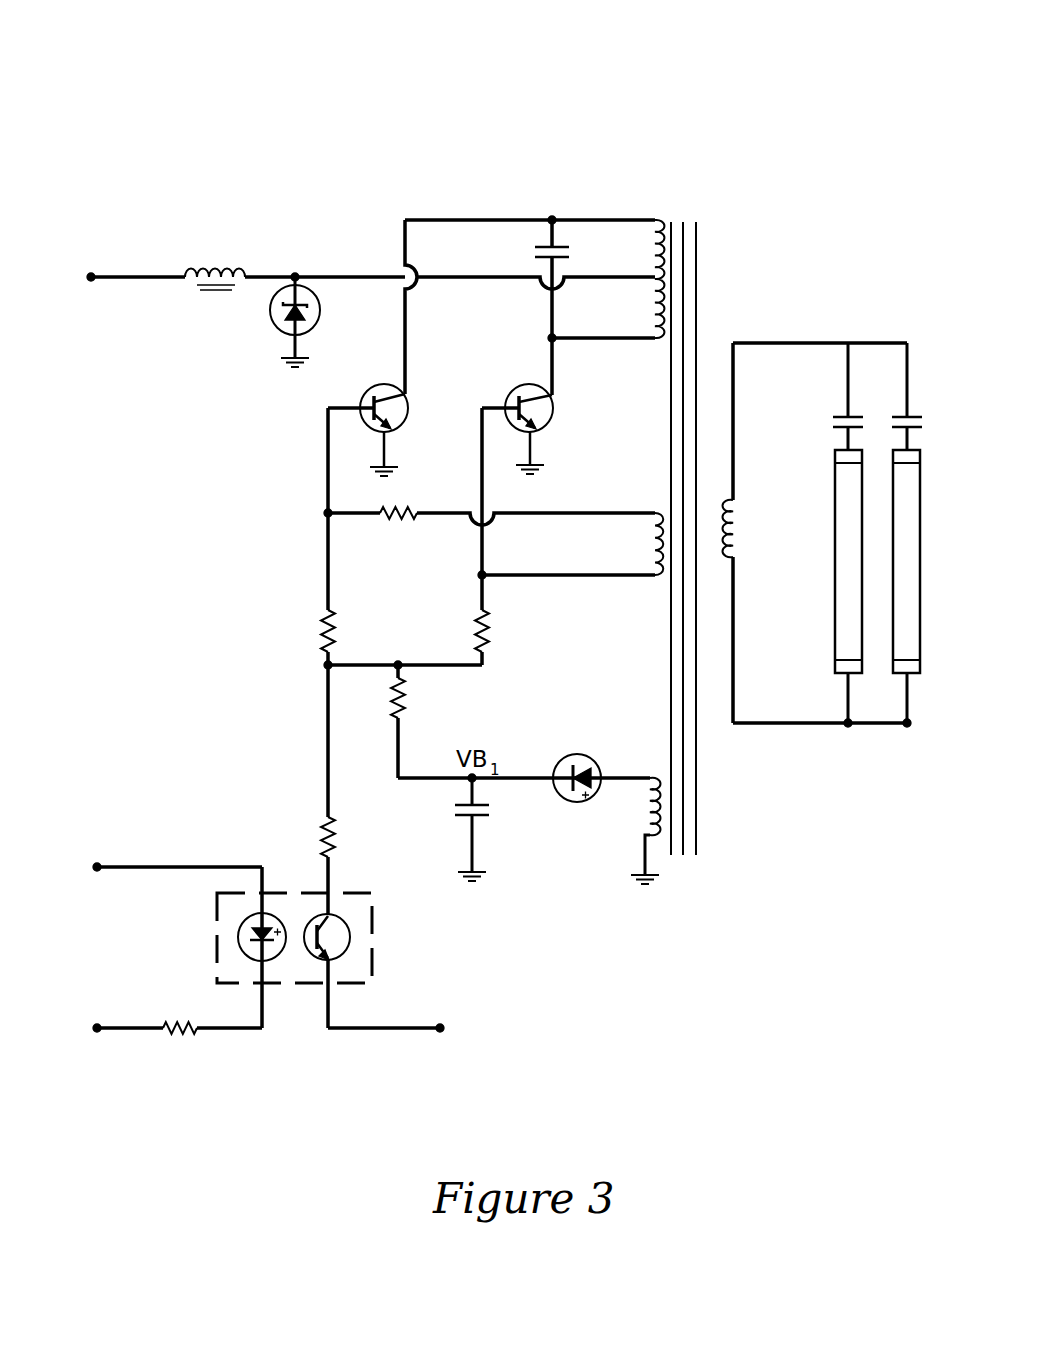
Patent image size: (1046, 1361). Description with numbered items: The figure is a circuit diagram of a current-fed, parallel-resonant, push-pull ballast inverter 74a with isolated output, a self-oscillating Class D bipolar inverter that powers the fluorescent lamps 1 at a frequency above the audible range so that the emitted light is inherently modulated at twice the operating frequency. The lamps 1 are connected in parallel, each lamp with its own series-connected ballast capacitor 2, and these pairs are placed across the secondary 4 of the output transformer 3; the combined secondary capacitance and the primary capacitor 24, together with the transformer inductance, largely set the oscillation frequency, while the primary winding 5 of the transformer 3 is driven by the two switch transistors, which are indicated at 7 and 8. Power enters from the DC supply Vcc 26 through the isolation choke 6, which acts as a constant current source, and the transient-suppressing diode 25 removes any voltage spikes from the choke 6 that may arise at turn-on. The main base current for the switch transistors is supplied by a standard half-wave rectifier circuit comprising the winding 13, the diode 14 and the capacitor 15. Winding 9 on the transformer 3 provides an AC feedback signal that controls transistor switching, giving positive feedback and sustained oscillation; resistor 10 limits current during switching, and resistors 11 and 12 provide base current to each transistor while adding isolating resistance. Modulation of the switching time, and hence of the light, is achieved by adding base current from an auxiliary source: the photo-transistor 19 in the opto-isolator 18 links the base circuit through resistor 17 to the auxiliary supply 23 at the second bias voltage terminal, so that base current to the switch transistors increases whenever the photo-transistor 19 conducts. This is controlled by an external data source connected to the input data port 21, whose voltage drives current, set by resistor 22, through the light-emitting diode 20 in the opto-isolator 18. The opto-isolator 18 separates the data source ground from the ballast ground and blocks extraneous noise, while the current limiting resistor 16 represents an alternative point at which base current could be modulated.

The push-pull ballast inverter 74a is at (550, 129).
The fluorescent lamps 1 is at (835, 612).
The ballast capacitor 2 is at (838, 416).
The output transformer 3 is at (684, 220).
The secondary 4 is at (735, 512).
The primary winding 5 is at (655, 220).
The isolation choke 6 is at (215, 262).
The transistor Q1 7 is at (372, 396).
The transistor Q2 8 is at (520, 392).
The winding 9 is at (655, 513).
The resistor 10 is at (388, 520).
The resistor 11 is at (336, 626).
The resistor 12 is at (488, 627).
The half-wave rectifier component 13 is at (652, 778).
The half-wave rectifier component 14 is at (591, 761).
The half-wave rectifier component 15 is at (478, 820).
The current limiting resistor 16 is at (405, 696).
The resistor 17 is at (335, 834).
The opto-isolator 18 is at (375, 926).
The photo-transistor 19 is at (332, 939).
The light-emitting diode 20 is at (258, 935).
The input data port 21 is at (92, 867).
The resistor 22 is at (188, 1025).
The auxiliary supply 23 is at (432, 1031).
The primary capacitor 24 is at (535, 246).
The transient-suppressing diode 25 is at (272, 325).
The DC supply Vcc 26 is at (90, 281).